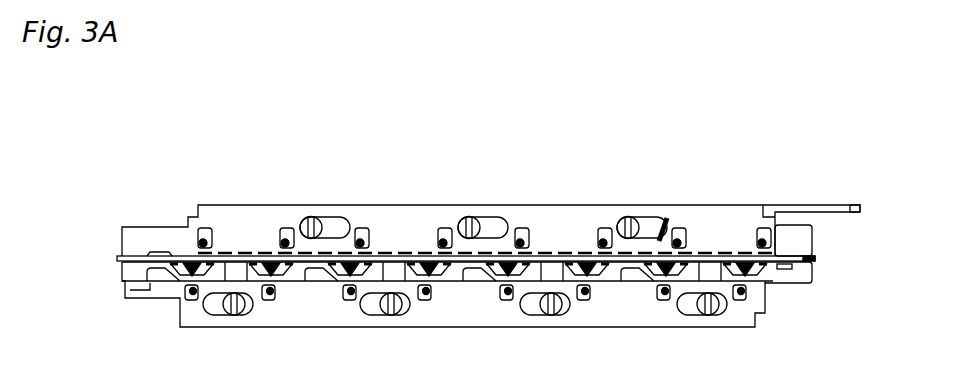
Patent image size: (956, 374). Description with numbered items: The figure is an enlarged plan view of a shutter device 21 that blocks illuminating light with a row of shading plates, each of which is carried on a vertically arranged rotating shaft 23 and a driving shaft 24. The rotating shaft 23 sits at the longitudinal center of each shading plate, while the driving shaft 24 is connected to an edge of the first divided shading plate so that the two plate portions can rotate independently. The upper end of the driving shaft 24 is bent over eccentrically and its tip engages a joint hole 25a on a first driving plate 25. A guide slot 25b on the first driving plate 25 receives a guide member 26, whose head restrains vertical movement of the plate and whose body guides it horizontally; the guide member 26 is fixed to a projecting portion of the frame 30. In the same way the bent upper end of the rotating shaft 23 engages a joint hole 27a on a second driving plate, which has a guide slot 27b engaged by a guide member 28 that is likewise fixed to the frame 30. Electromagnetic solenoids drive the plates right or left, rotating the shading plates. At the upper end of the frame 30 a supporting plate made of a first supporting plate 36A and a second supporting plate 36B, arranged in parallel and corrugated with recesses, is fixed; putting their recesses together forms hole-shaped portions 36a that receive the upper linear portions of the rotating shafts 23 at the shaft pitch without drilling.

The shutter device 21 is at (689, 155).
The rotating shaft 23 is at (207, 228).
The driving shaft 24 is at (190, 302).
The first driving plate 25 is at (297, 328).
The joint hole 25a is at (512, 306).
The guide slot 25b is at (219, 316).
The guide member 26 is at (246, 314).
The joint hole 27a is at (364, 228).
The guide slot 27b is at (486, 216).
The guide member 28 is at (311, 217).
The frame 30 is at (817, 259).
The first supporting plate 36A is at (793, 284).
The second supporting plate 36B is at (805, 243).
The hole-shaped portion 36a is at (347, 282).